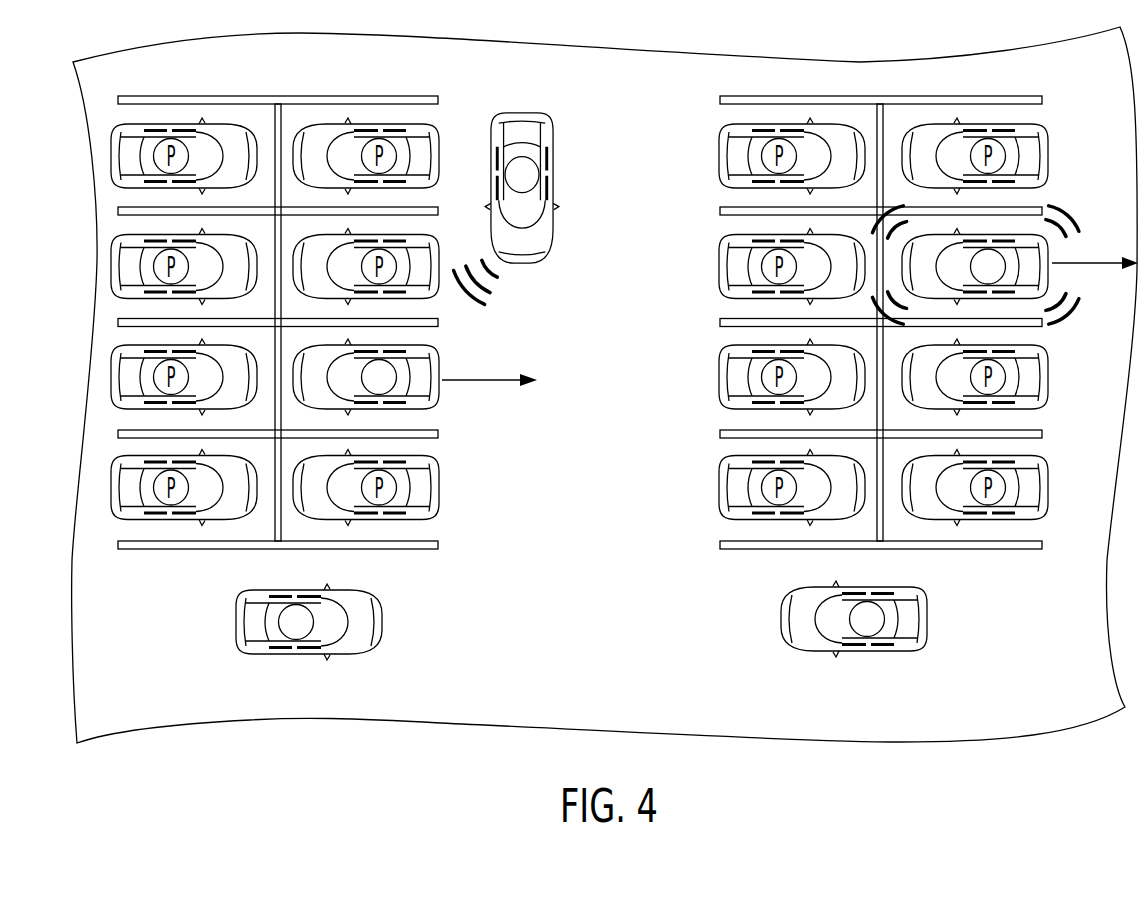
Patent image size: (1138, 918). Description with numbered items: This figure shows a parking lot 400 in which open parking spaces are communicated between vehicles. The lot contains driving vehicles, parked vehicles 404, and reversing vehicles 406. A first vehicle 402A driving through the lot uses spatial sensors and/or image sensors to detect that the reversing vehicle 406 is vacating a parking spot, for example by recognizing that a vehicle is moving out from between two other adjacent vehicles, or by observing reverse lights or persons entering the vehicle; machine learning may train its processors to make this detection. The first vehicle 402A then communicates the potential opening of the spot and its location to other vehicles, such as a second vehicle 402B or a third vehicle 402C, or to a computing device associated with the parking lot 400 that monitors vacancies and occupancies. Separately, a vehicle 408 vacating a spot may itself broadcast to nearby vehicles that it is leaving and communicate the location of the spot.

The parking lot 400 is at (632, 70).
The first vehicle 402A is at (553, 190).
The second vehicle 402B is at (280, 654).
The third vehicle 402C is at (887, 645).
The parked vehicles 404 is at (183, 125).
The reversing vehicle 406 is at (408, 405).
The vehicle vacating a parking spot 408 is at (1020, 290).